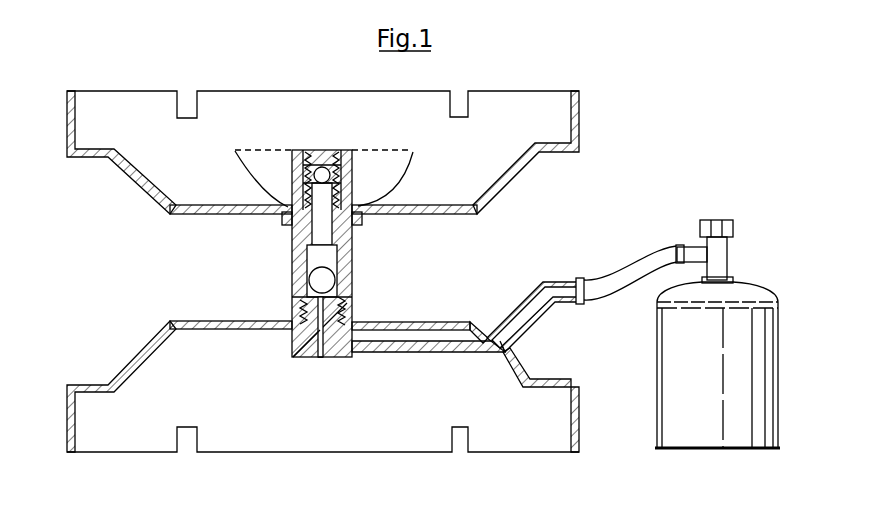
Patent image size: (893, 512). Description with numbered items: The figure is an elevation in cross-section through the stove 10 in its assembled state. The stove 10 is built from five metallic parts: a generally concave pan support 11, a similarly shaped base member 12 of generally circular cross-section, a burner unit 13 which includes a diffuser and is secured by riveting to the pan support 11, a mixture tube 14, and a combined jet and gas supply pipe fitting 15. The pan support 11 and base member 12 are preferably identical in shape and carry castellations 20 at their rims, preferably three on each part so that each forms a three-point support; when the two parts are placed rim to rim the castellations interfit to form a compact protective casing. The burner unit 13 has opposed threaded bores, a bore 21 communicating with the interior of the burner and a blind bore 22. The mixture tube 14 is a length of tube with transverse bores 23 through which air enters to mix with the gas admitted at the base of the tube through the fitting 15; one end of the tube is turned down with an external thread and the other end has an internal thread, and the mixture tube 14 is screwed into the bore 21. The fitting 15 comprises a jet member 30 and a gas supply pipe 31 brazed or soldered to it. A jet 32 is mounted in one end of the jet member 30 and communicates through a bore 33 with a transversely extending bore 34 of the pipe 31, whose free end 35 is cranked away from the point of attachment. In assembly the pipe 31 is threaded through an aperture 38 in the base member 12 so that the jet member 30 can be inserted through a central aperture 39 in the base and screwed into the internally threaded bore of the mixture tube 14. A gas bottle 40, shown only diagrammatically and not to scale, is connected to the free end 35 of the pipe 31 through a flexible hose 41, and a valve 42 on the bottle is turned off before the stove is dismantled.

The stove 10 is at (82, 164).
The pan support 11 is at (580, 128).
The base member 12 is at (580, 434).
The burner unit 13 is at (408, 168).
The mixture tube 14 is at (348, 263).
The jet and gas supply pipe fitting 15 is at (346, 352).
The castellations 20 is at (133, 102).
The bore 21 is at (340, 206).
The blind bore 22 is at (305, 160).
The transverse bores 23 is at (333, 286).
The jet member 30 is at (341, 311).
The gas supply pipe 31 is at (430, 352).
The jet 32 is at (303, 305).
The bore 33 is at (300, 358).
The transversely extending bore 34 is at (345, 357).
The free end 35 is at (551, 282).
The aperture 38 is at (507, 351).
The central aperture 39 is at (295, 337).
The gas bottle 40 is at (668, 368).
The flexible hose 41 is at (642, 258).
The valve 42 is at (727, 220).